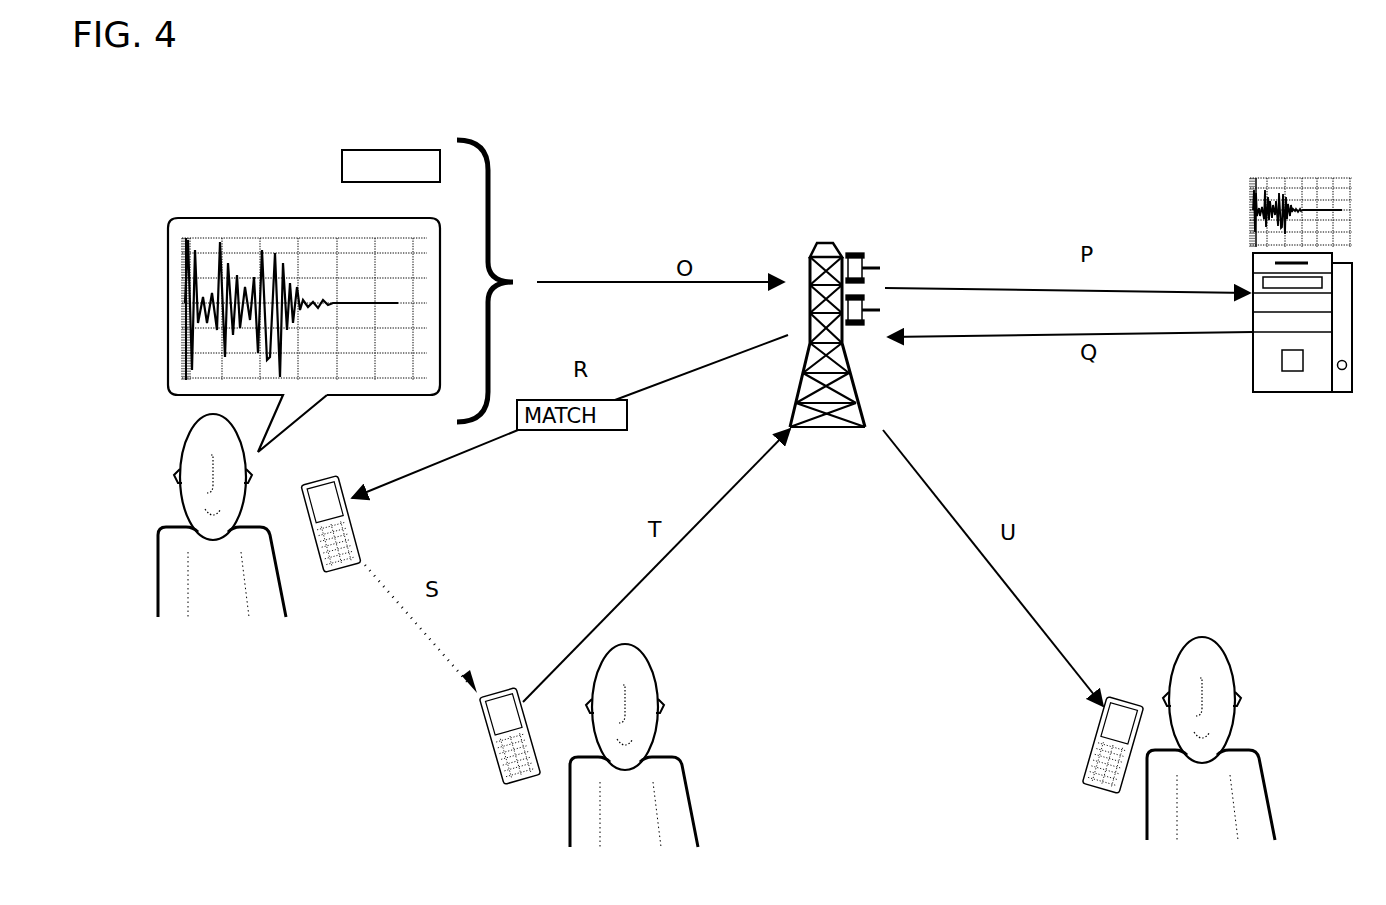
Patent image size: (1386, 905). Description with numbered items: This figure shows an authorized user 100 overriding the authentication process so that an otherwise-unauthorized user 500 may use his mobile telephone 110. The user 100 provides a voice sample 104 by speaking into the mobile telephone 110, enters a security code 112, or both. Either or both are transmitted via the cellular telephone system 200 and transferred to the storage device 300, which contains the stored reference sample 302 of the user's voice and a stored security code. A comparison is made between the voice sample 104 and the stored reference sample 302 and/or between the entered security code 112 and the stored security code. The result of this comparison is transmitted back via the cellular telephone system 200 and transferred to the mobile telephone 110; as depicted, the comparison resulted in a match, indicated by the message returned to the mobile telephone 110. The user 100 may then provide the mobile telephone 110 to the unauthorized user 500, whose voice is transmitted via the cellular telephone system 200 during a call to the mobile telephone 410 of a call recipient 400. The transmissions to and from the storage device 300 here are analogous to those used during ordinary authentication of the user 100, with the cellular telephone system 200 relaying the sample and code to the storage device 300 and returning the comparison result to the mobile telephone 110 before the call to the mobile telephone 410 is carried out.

The user 100 is at (143, 487).
The voice sample 104 is at (197, 323).
The mobile telephone 110 is at (340, 567).
The security code 112 is at (373, 152).
The cellular telephone system 200 is at (833, 430).
The storage device 300 is at (1278, 392).
The stored reference sample 302 is at (1295, 187).
The call recipient 400 is at (1122, 827).
The mobile telephone of call recipient 410 is at (1092, 753).
The unauthorized user 500 is at (548, 837).